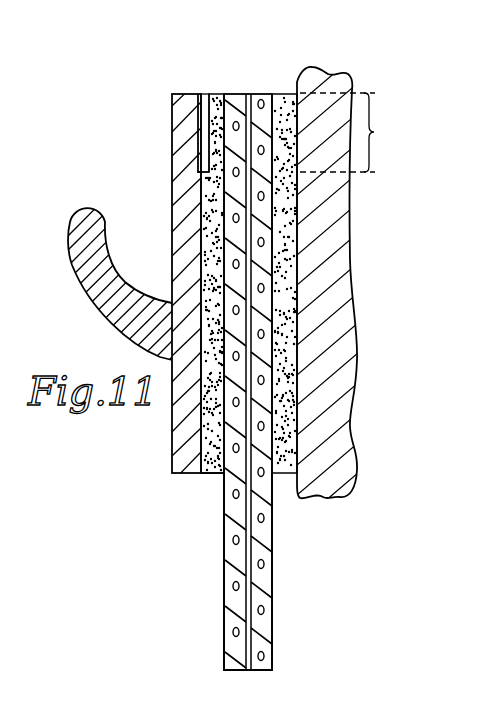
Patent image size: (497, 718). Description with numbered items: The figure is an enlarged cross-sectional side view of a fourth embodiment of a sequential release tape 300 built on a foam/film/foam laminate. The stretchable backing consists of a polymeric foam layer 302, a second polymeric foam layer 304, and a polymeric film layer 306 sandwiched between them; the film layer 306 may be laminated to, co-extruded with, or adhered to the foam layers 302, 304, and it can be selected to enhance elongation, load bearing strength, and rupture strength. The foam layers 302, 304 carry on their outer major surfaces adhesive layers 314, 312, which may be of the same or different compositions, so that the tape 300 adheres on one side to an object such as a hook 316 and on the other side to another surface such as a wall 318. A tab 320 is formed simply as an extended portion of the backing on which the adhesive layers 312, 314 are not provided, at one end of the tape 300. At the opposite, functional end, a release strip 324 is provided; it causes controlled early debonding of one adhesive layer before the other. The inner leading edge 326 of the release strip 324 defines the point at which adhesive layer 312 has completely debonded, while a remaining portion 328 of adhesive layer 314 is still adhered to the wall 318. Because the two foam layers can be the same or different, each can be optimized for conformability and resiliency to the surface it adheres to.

The sequential release tape 300 is at (193, 535).
The polymeric foam layer 302 is at (262, 93).
The polymeric foam layer 304 is at (232, 93).
The polymeric film layer 306 is at (247, 93).
The adhesive layer 312 is at (210, 473).
The adhesive layer 314 is at (283, 93).
The hook 316 is at (95, 295).
The wall 318 is at (348, 307).
The tab 320 is at (275, 609).
The release strip 324 is at (208, 94).
The inner leading edge 326 is at (203, 196).
The remaining portion 328 is at (366, 132).